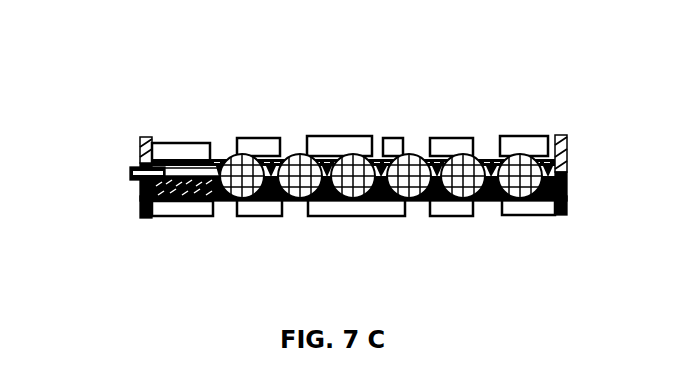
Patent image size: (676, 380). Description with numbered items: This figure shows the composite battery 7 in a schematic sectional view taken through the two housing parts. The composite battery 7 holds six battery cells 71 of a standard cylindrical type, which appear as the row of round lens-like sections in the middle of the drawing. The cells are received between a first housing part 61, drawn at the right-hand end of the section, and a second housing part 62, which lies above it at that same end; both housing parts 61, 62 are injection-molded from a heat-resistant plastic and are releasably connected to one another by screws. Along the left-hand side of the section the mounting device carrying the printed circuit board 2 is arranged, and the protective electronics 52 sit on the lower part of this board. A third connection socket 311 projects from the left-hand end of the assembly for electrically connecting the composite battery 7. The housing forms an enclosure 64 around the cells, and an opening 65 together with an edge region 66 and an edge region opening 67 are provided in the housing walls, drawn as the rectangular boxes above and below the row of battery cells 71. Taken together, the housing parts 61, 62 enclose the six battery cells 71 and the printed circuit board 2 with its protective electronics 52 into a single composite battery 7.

The composite battery 7 is at (570, 107).
The printed circuit board 2 is at (205, 200).
The protective electronics 52 is at (173, 190).
The first housing part 61 is at (565, 202).
The second housing part 62 is at (565, 150).
The enclosure 64 is at (218, 185).
The opening 65 is at (373, 155).
The edge region 66 is at (175, 145).
The edge region opening 67 is at (220, 140).
The battery cell 71 is at (515, 162).
The third connection socket 311 is at (130, 173).